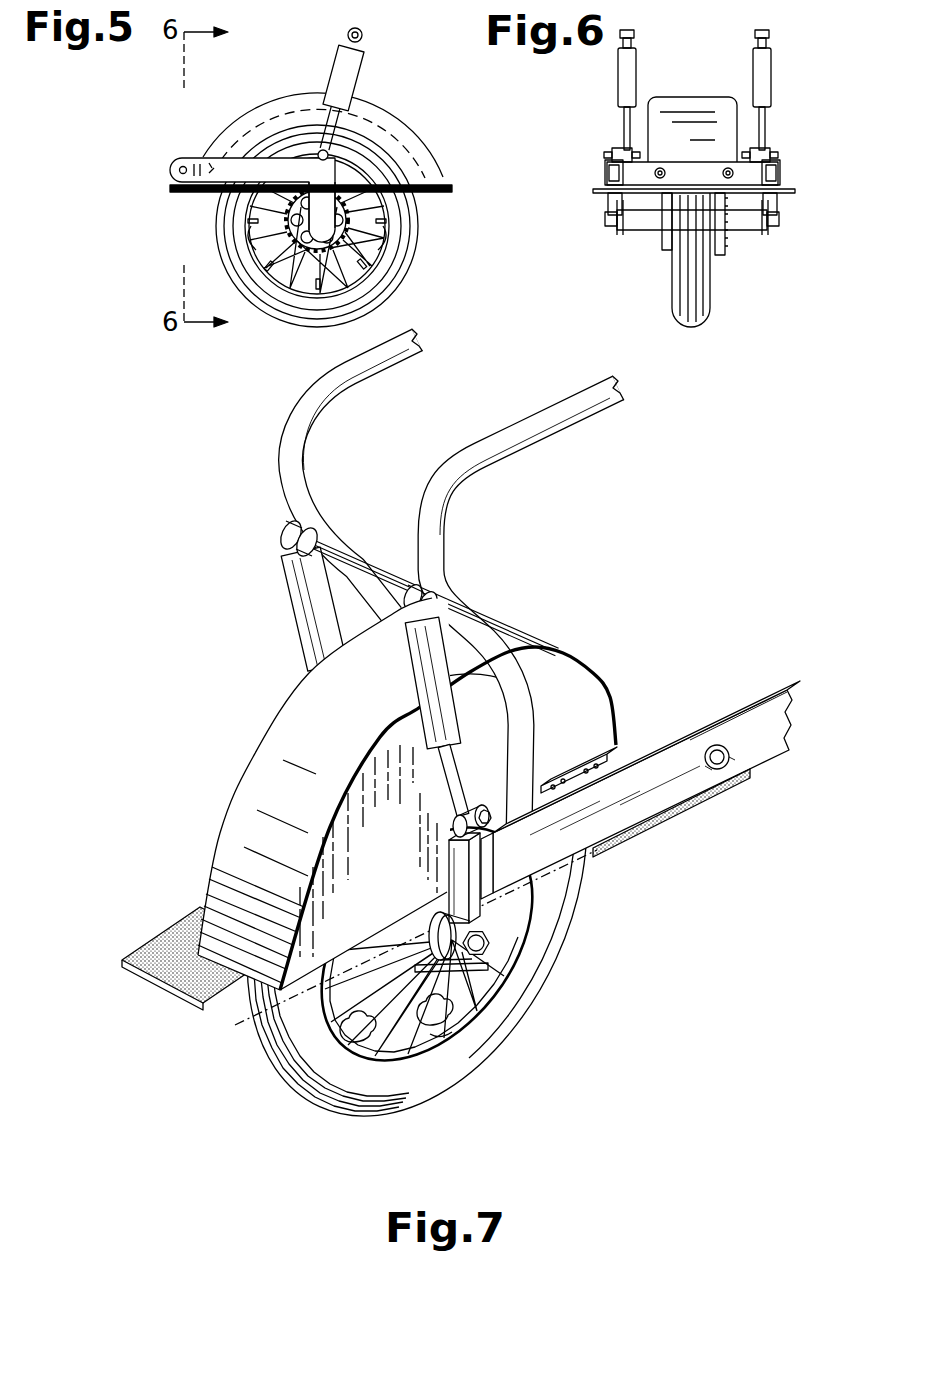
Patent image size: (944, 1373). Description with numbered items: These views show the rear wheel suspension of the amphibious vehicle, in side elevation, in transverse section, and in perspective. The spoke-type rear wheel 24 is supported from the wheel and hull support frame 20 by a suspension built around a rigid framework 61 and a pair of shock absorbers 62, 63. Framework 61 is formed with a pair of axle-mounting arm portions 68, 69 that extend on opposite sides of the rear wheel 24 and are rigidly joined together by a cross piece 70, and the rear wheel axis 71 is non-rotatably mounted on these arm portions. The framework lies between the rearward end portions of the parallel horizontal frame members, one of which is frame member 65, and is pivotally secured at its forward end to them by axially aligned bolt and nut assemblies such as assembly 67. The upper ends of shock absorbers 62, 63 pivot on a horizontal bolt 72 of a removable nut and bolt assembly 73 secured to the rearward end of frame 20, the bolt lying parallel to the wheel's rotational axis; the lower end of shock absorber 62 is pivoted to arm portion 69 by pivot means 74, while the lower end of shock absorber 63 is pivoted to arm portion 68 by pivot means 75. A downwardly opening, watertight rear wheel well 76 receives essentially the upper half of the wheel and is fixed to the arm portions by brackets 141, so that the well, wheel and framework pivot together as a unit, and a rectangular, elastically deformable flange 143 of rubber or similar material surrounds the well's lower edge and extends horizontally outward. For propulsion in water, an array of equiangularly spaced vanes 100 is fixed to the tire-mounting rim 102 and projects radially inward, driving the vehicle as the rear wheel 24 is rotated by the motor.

In FIG. 7, the wheel and hull support frame 20 is at (272, 447).
In FIG. 5, the rear wheel 24 is at (410, 271).
In FIG. 6, the rear wheel 24 is at (711, 313).
In FIG. 7, the rear wheel 24 is at (552, 957).
In FIG. 5, the rigid framework 61 is at (340, 168).
In FIG. 6, the rigid framework 61 is at (600, 154).
In FIG. 5, the shock absorber 62 is at (349, 78).
In FIG. 6, the shock absorber 62 is at (770, 75).
In FIG. 7, the shock absorber 62 is at (290, 630).
In FIG. 6, the shock absorber 63 is at (620, 68).
In FIG. 7, the shock absorber 63 is at (418, 697).
In FIG. 7, the frame member 65 is at (664, 843).
In FIG. 7, the bolt and nut assembly 67 is at (730, 770).
In FIG. 5, the axle-mounting arm portion 68 is at (262, 162).
In FIG. 6, the axle-mounting arm portion 68 is at (780, 173).
In FIG. 6, the axle-mounting arm portion 69 is at (606, 175).
In FIG. 7, the axle-mounting arm portion 69 is at (684, 720).
In FIG. 5, the cross piece 70 is at (199, 160).
In FIG. 6, the cross piece 70 is at (688, 168).
In FIG. 7, the cross piece 70 is at (616, 718).
In FIG. 6, the rear wheel axis 71 is at (646, 228).
In FIG. 7, the rear wheel axis 71 is at (438, 920).
In FIG. 7, the bolt 72 is at (366, 566).
In FIG. 7, the removable nut and bolt assembly 73 is at (358, 540).
In FIG. 6, the pivot means 74 is at (614, 150).
In FIG. 7, the pivot means 74 is at (444, 826).
In FIG. 6, the pivot means 75 is at (770, 155).
In FIG. 5, the rear wheel well 76 is at (420, 145).
In FIG. 6, the rear wheel well 76 is at (705, 100).
In FIG. 7, the rear wheel well 76 is at (259, 758).
In FIG. 5, the vanes 100 is at (250, 236).
In FIG. 7, the vanes 100 is at (430, 1020).
In FIG. 5, the tire-mounting rim 102 is at (380, 241).
In FIG. 7, the tire-mounting rim 102 is at (437, 1037).
In FIG. 7, the bracket 141 is at (589, 748).
In FIG. 6, the flange 143 is at (600, 192).
In FIG. 7, the flange 143 is at (166, 966).